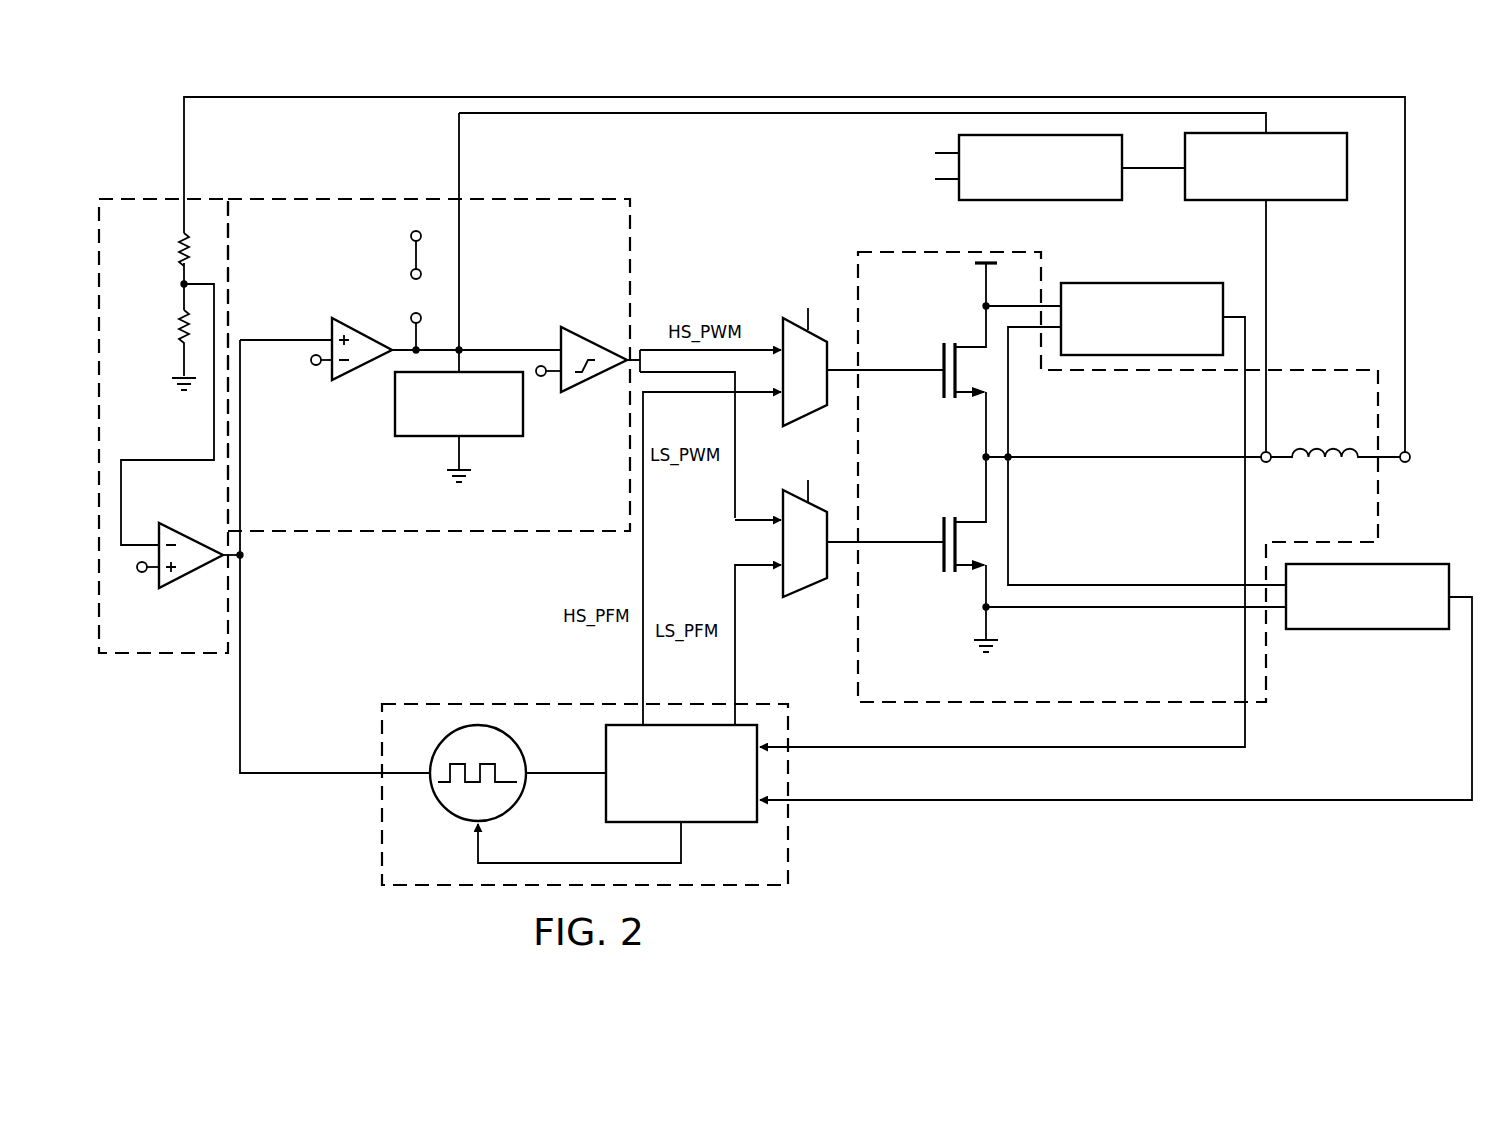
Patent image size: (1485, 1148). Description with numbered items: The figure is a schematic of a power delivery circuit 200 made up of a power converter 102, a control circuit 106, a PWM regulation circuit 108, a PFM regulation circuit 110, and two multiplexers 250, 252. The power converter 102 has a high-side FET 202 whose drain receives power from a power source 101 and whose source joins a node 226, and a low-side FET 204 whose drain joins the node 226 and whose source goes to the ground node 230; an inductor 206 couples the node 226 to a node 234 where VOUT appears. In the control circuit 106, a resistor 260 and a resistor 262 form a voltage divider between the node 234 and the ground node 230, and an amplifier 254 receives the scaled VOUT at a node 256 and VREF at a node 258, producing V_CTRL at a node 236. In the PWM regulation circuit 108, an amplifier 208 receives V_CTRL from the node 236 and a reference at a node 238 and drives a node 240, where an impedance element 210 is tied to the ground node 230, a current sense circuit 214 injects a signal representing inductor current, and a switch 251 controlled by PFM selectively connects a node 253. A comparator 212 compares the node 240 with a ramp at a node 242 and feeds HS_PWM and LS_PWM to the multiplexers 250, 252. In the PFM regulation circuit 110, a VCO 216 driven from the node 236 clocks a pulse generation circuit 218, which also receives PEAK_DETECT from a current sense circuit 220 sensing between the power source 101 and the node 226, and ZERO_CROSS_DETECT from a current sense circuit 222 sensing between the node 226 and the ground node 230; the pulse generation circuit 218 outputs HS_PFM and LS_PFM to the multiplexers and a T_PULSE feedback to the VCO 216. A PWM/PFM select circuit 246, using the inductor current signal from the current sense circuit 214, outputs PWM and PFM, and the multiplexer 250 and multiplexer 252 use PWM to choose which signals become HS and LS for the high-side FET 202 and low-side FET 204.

The circuit 200 is at (160, 113).
The power source 101 is at (980, 268).
The power converter 102 is at (1300, 368).
The control circuit 106 is at (163, 660).
The PWM regulation circuit 108 is at (362, 197).
The PFM regulation circuit 110 is at (378, 806).
The high-side FET 202 is at (940, 382).
The low-side FET 204 is at (940, 556).
The inductor 206 is at (1328, 444).
The amplifier 208 is at (384, 340).
The impedance element 210 is at (394, 410).
The comparator 212 is at (588, 342).
The current sense circuit 214 is at (1332, 203).
The VCO 216 is at (442, 808).
The pulse generation circuit 218 is at (723, 826).
The current sense circuit 220 is at (1154, 280).
The current sense circuit 222 is at (1365, 634).
The node 226 is at (983, 455).
The ground node 230 is at (176, 392).
The node 234 is at (1406, 465).
The node 236 is at (244, 560).
The node 238 is at (313, 368).
The node 240 is at (461, 348).
The node 242 is at (543, 378).
The PWM/PFM select circuit 246 is at (1105, 203).
The multiplexer 250 is at (797, 413).
The switch 251 is at (398, 298).
The multiplexer 252 is at (806, 590).
The node 253 is at (410, 238).
The amplifier 254 is at (197, 540).
The node 256 is at (181, 288).
The node 258 is at (145, 574).
The resistor 260 is at (176, 250).
The resistor 262 is at (177, 328).